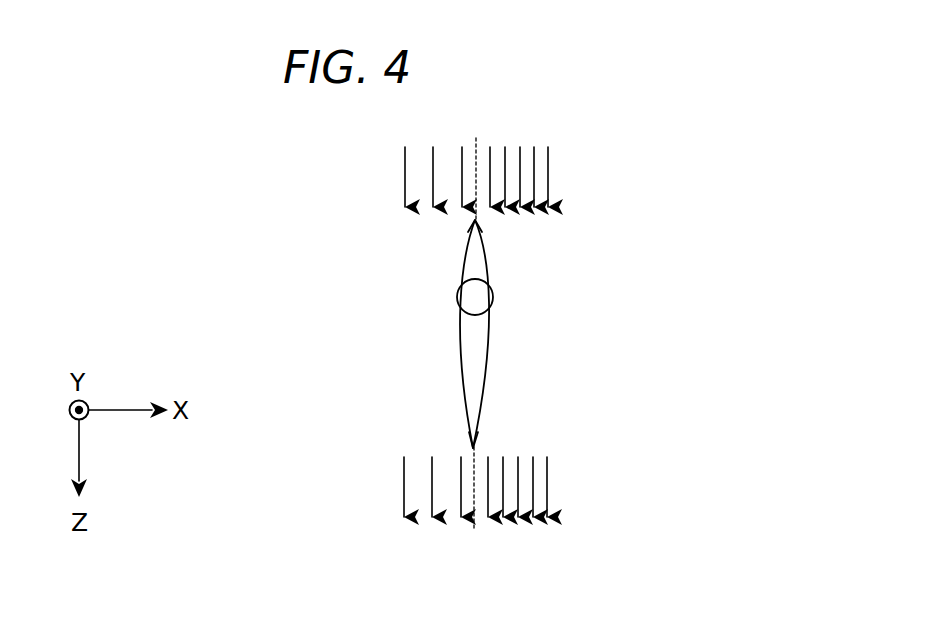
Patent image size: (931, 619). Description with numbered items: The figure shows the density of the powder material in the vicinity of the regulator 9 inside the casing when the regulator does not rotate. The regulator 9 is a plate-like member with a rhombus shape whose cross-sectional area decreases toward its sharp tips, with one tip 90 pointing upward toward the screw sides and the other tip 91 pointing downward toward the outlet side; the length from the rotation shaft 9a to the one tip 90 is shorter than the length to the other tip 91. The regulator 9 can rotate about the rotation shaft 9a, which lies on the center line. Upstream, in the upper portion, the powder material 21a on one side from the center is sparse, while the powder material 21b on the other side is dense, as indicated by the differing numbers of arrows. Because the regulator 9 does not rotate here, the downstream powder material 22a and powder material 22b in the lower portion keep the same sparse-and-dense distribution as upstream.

The regulator 9 is at (472, 353).
The rotation shaft 9a is at (475, 297).
The one tip 90 is at (477, 223).
The other tip 91 is at (474, 447).
The powder material on one side from the center 21a is at (433, 161).
The powder material on the other side from the center 21b is at (519, 161).
The powder material on one side from the center 22a is at (432, 505).
The powder material on the other side from the center 22b is at (517, 505).